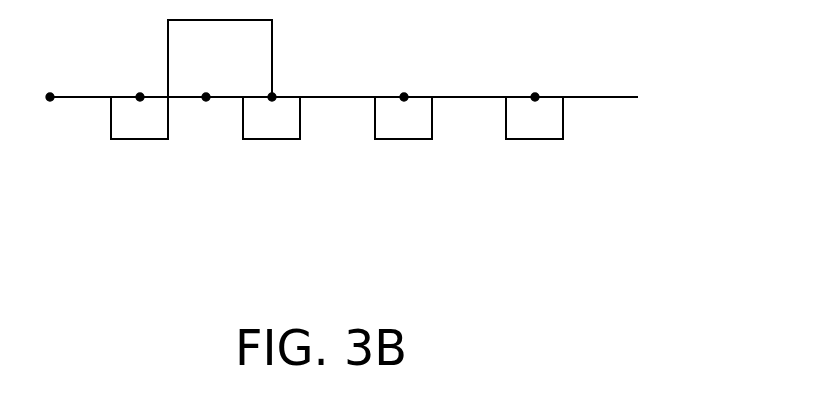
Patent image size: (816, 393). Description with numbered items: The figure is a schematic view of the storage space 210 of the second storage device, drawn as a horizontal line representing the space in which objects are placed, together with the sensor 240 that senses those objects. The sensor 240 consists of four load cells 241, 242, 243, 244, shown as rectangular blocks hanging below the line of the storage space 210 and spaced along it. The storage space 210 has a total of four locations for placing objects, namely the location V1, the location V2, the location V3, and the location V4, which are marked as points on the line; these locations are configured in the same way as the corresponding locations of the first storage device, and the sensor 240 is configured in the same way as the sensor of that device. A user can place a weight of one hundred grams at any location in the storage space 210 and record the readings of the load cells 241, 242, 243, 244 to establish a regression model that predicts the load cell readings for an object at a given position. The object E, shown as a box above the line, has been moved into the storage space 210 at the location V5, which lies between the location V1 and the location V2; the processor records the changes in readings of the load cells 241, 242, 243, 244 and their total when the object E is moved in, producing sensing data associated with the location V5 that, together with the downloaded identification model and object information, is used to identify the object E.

The storage space 210 is at (608, 97).
The sensor 240 is at (338, 154).
The load cell 241 is at (139, 139).
The load cell 242 is at (272, 139).
The load cell 243 is at (403, 139).
The load cell 244 is at (533, 139).
The location V1 is at (140, 97).
The location V2 is at (272, 97).
The location V3 is at (404, 97).
The location V4 is at (567, 140).
The location V5 is at (206, 97).